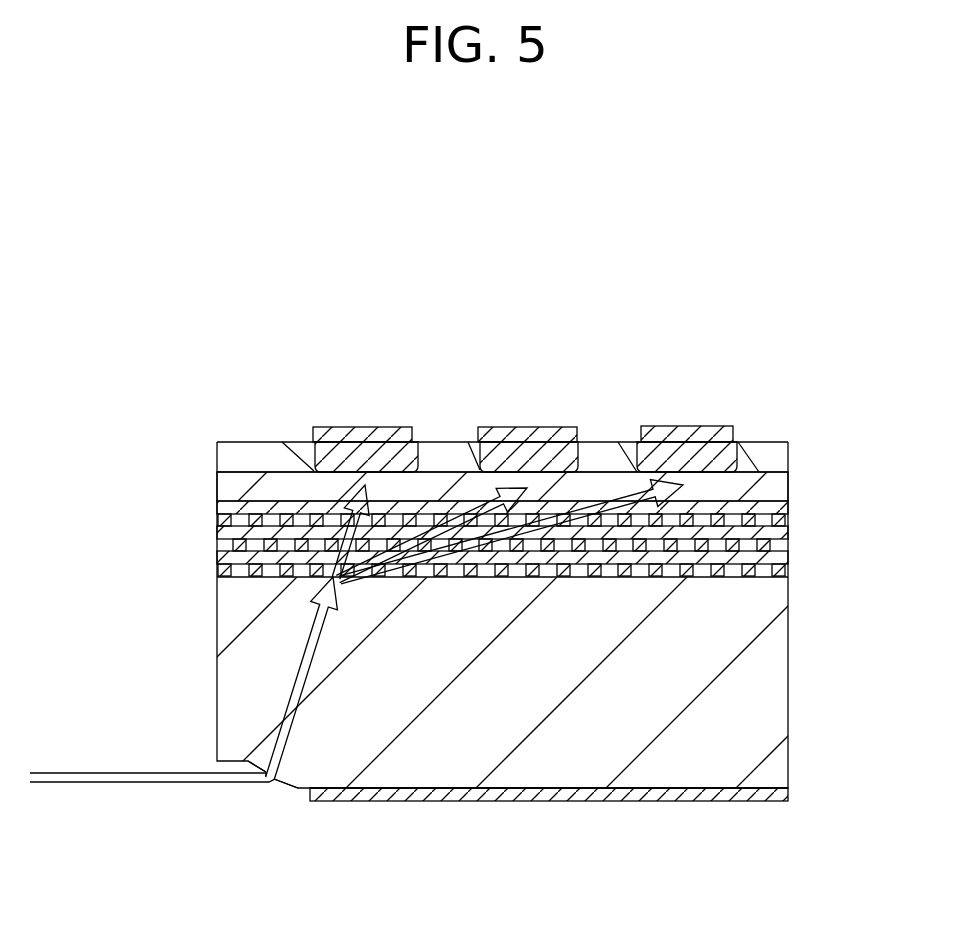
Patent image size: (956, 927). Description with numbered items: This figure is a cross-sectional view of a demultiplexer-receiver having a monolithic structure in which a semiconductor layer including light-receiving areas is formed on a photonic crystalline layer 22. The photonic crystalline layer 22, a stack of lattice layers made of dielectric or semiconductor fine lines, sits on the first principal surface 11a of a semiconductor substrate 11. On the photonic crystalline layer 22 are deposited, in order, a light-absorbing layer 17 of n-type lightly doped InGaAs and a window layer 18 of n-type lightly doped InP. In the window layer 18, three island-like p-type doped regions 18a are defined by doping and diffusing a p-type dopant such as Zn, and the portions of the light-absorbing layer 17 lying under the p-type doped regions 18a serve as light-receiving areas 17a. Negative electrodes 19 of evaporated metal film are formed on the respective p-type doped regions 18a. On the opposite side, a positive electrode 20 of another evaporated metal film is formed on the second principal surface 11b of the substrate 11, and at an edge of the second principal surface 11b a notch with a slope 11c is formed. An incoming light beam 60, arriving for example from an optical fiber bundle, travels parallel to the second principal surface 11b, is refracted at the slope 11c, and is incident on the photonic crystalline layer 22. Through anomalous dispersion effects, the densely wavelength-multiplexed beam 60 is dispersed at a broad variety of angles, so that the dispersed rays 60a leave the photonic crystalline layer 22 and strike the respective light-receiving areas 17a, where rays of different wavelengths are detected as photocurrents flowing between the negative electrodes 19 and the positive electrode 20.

The semiconductor substrate 11 is at (790, 706).
The first principal surface 11a is at (766, 578).
The second principal surface 11b is at (718, 802).
The slope 11c is at (279, 789).
The light-absorbing layer 17 is at (215, 493).
The light-receiving areas 17a is at (524, 485).
The window layer 18 is at (215, 457).
The p-type doped regions 18a is at (303, 443).
The negative electrodes 19 is at (363, 427).
The positive electrode 20 is at (608, 802).
The photonic crystalline layer 22 is at (795, 493).
The incoming light beam 60 is at (118, 773).
The dispersed rays 60a is at (443, 545).